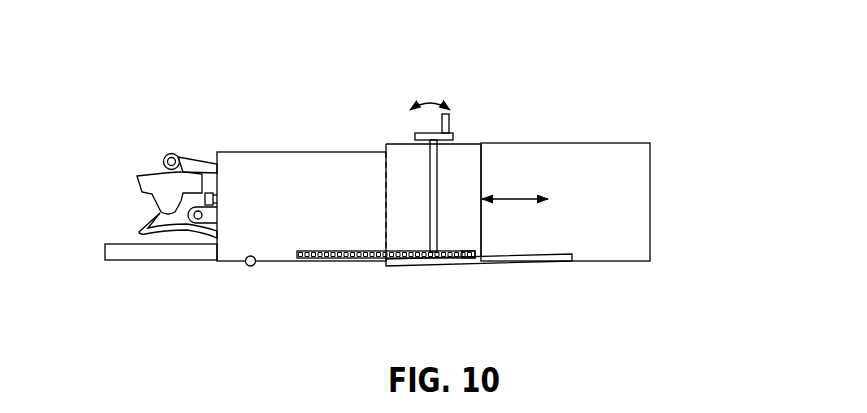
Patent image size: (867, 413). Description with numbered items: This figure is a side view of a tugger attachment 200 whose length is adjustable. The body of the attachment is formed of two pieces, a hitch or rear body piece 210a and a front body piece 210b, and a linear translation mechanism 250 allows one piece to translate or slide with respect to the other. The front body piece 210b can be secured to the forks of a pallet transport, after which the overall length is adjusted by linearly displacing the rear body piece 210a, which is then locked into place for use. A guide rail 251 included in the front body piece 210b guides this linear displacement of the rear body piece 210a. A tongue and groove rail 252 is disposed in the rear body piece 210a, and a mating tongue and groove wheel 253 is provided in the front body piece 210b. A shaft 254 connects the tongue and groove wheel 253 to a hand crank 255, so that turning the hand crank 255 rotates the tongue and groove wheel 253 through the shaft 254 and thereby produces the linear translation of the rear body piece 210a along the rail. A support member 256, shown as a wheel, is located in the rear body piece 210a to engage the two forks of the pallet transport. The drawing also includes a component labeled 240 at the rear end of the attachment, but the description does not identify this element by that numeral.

The tugger attachment 200 is at (441, 147).
The rear body piece 210a is at (309, 239).
The front body piece 210b is at (630, 240).
The gripper assembly 240 is at (133, 143).
The linear translation mechanism 250 is at (437, 155).
The guide rail 251 is at (545, 261).
The tongue and groove rail 252 is at (338, 262).
The tongue and groove wheel 253 is at (455, 269).
The shaft 254 is at (438, 177).
The hand crank 255 is at (418, 137).
The support member 256 is at (243, 272).